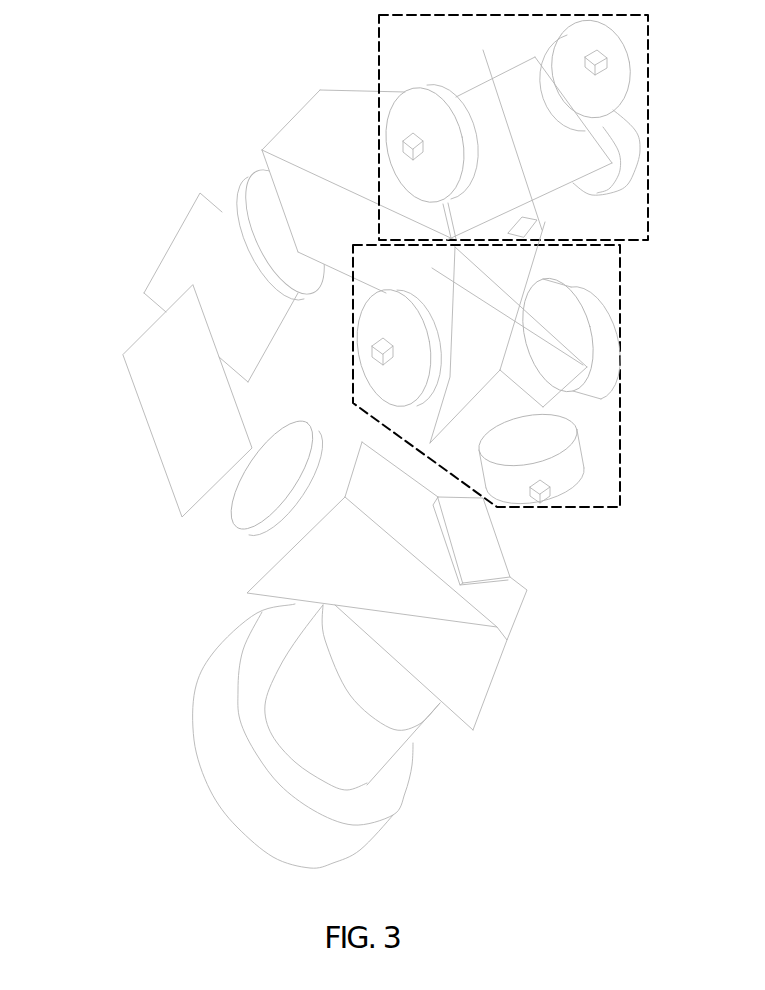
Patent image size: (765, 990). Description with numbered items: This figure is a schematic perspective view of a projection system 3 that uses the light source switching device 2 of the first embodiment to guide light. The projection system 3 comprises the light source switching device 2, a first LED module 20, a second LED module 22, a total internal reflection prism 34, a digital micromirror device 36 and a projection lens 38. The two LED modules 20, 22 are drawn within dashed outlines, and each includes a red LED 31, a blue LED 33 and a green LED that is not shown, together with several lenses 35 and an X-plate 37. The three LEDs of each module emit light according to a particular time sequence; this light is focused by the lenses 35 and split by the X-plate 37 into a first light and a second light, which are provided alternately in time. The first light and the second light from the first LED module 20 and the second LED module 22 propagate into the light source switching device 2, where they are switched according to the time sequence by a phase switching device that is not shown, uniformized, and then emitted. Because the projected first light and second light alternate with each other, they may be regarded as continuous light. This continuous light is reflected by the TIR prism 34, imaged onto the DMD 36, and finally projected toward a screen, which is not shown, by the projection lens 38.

The light source switching device 2 is at (300, 131).
The projection system 3 is at (92, 255).
The first LED module 20 is at (621, 462).
The second LED module 22 is at (650, 184).
The red LED 31 is at (410, 150).
The blue LED 33 is at (592, 62).
The total internal reflection (TIR) prism 34 is at (482, 660).
The lenses 35 is at (422, 104).
The digital micromirror device (DMD) 36 is at (490, 540).
The X-plate 37 is at (480, 95).
The projection lens 38 is at (212, 729).